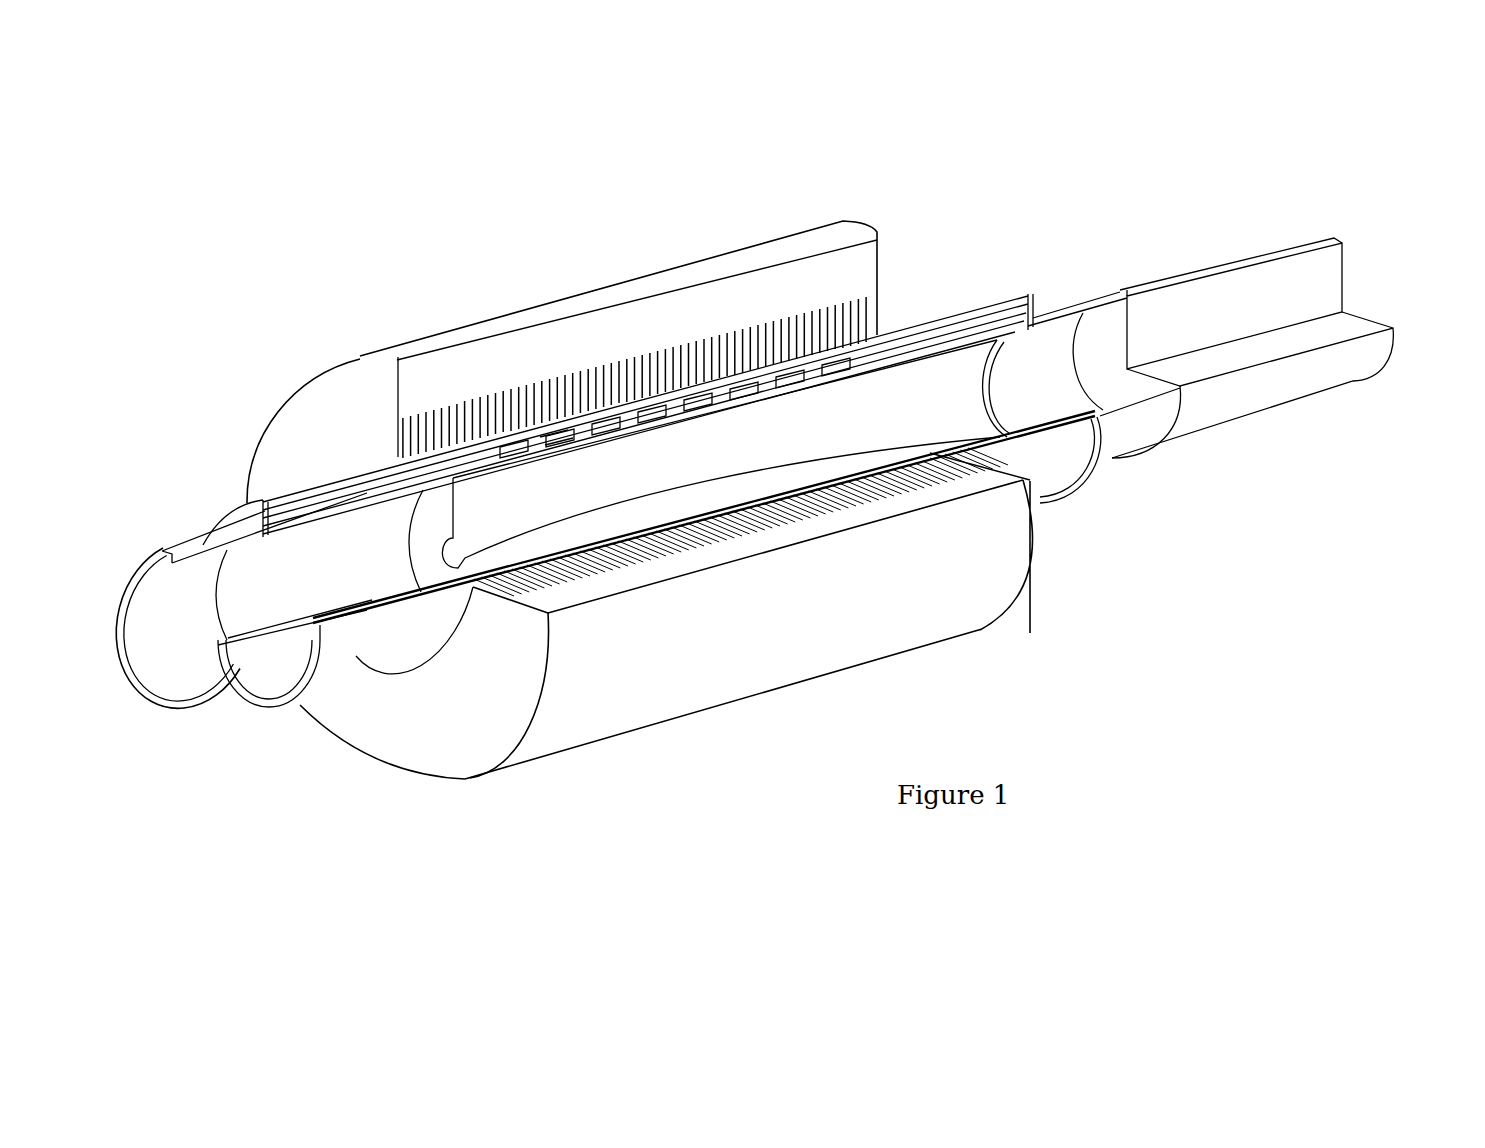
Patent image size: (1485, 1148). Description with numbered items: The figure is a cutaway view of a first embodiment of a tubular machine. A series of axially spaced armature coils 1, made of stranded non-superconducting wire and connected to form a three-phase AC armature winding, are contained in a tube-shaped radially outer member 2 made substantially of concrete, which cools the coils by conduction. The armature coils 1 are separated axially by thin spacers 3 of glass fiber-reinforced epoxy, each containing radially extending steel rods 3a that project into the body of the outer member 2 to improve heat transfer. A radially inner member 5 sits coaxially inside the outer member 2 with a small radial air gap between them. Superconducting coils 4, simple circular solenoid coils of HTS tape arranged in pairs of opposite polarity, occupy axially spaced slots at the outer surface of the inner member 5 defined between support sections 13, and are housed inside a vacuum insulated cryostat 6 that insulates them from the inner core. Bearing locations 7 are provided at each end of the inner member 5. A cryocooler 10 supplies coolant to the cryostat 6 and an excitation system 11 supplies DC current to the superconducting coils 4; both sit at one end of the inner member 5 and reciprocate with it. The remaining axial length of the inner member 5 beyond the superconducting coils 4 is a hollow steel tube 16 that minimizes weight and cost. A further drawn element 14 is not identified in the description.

The armature coils 1 is at (832, 336).
The radially outer member 2 is at (448, 367).
The spacers 3 is at (644, 423).
The steel rods 3a is at (788, 317).
The superconducting coils 4 is at (582, 427).
The radially inner member 5 is at (1127, 275).
The cryostat 6 is at (390, 645).
The bearing locations 7 is at (250, 662).
The cryocooler 10 is at (1287, 303).
The excitation system 11 is at (1231, 267).
The support sections 13 is at (685, 402).
The outer tube 14 is at (345, 517).
The hollow steel tube 16 is at (298, 513).